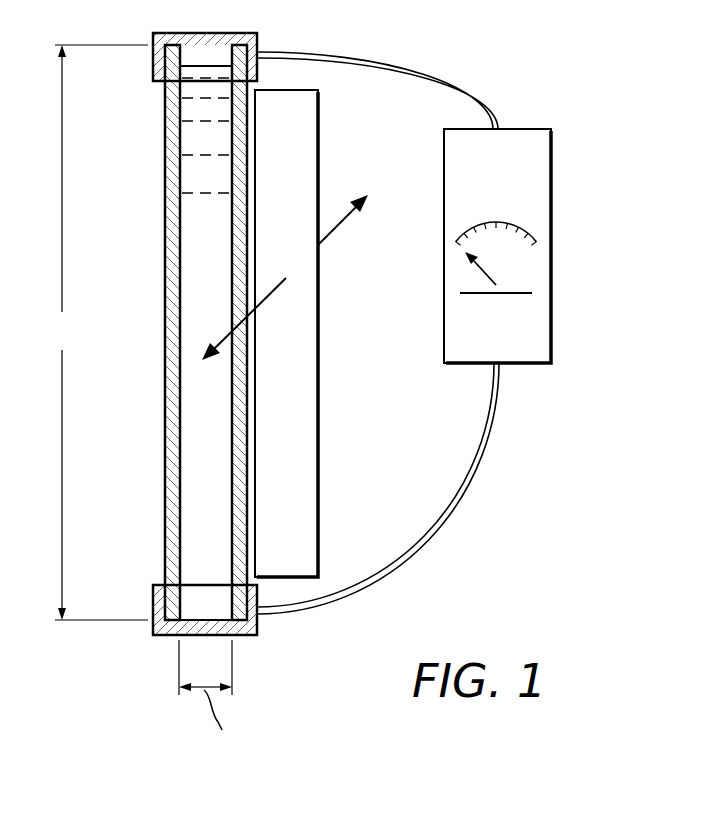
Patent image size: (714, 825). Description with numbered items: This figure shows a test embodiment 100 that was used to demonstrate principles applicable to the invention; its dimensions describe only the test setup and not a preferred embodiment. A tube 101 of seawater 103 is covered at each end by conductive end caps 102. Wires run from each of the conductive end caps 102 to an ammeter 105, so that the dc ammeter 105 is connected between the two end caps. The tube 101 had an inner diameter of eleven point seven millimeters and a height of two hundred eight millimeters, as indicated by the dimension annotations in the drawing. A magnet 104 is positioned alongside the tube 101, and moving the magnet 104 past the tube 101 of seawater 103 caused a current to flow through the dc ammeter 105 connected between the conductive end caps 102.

The test embodiment 100 is at (537, 55).
The tube 101 is at (165, 143).
The conductive end caps 102 is at (259, 41).
The seawater 103 is at (223, 226).
The magnet 104 is at (320, 473).
The ammeter 105 is at (553, 190).